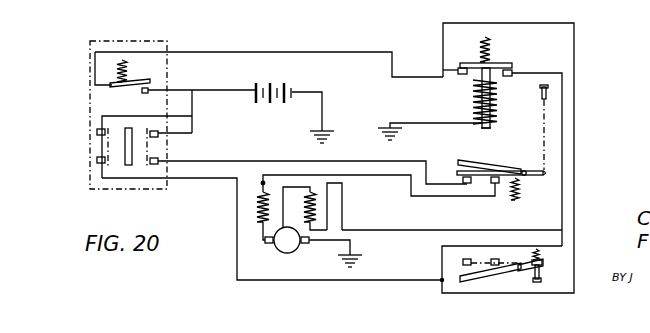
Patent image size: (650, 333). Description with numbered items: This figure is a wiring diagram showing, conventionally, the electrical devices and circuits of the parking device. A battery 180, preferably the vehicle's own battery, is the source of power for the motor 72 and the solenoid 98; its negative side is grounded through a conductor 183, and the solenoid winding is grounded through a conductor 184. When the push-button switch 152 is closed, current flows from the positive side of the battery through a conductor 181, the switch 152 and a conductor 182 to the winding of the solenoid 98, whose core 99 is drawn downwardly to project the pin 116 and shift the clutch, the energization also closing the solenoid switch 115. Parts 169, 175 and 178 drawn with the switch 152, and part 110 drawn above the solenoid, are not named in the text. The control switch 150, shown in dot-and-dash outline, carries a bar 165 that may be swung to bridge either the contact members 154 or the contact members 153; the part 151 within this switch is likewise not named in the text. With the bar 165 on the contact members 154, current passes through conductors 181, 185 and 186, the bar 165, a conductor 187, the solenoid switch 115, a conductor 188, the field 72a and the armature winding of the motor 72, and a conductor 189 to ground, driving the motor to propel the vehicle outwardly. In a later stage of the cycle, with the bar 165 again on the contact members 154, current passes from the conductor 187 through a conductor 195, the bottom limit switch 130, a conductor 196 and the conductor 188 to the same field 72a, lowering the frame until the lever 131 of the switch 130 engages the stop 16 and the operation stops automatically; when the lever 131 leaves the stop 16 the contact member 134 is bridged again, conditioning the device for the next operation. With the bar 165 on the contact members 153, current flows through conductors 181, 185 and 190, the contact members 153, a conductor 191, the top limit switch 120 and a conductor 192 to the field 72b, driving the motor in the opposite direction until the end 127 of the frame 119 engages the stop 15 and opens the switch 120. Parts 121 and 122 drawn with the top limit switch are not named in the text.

The switch 150 is at (86, 115).
The relay armature assembly 151 is at (118, 163).
The switch 152 is at (110, 77).
The contact members 153 is at (158, 136).
The contact members 154 is at (97, 133).
The bar 165 is at (128, 167).
The contact 169 is at (143, 94).
The switch arm 175 is at (133, 82).
The spring 178 is at (122, 60).
The battery 180 is at (290, 82).
The conductor 181 is at (207, 90).
The conductor 182 is at (246, 52).
The conductor 183 is at (324, 112).
The conductor 184 is at (430, 122).
The conductor 185 is at (193, 105).
The conductor 186 is at (146, 116).
The conductor 187 is at (191, 180).
The conductor 188 is at (563, 127).
The conductor 189 is at (320, 243).
The conductor 190 is at (193, 126).
The conductor 191 is at (251, 161).
The conductor 192 is at (349, 176).
The motor 72 is at (279, 253).
The field 72a is at (318, 204).
The field 72b is at (257, 216).
The solenoid 98 is at (473, 95).
The core 99 is at (491, 109).
The spring 110 is at (489, 50).
The solenoid switch 115 is at (472, 61).
The pin 116 is at (491, 126).
The stop 15 is at (547, 91).
The frame 119 is at (529, 187).
The top limit switch 120 is at (479, 171).
The armature lever 121 is at (458, 161).
The contacts 122 is at (494, 184).
The end 127 is at (548, 166).
The bottom limit switch 130 is at (512, 278).
The lever 131 is at (468, 283).
The contact member 134 is at (495, 259).
The stop 16 is at (546, 277).
The conductor 195 is at (442, 265).
The conductor 196 is at (542, 250).